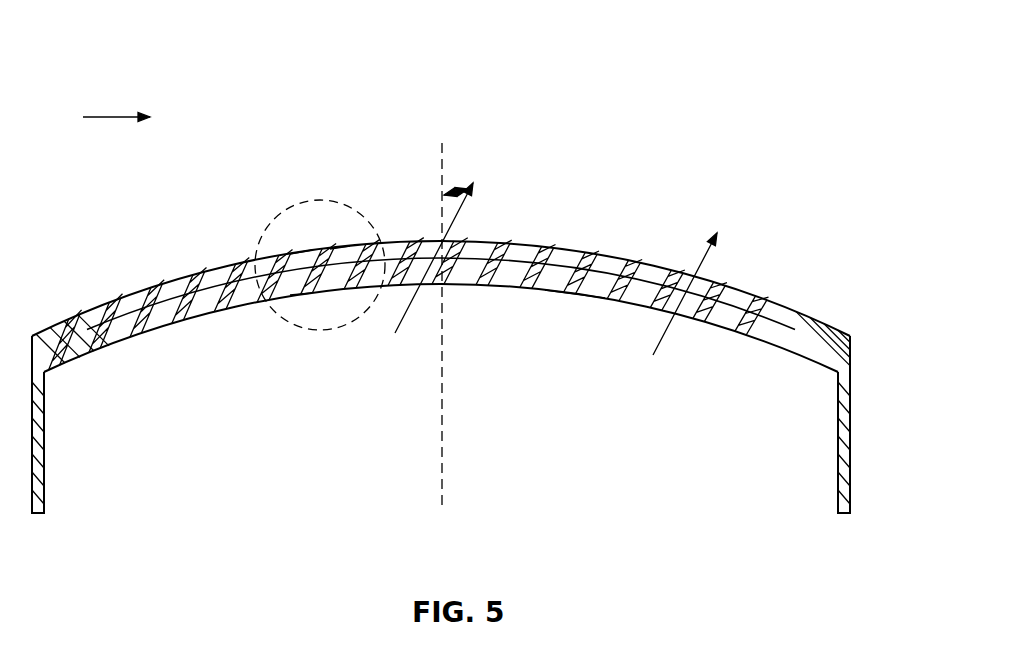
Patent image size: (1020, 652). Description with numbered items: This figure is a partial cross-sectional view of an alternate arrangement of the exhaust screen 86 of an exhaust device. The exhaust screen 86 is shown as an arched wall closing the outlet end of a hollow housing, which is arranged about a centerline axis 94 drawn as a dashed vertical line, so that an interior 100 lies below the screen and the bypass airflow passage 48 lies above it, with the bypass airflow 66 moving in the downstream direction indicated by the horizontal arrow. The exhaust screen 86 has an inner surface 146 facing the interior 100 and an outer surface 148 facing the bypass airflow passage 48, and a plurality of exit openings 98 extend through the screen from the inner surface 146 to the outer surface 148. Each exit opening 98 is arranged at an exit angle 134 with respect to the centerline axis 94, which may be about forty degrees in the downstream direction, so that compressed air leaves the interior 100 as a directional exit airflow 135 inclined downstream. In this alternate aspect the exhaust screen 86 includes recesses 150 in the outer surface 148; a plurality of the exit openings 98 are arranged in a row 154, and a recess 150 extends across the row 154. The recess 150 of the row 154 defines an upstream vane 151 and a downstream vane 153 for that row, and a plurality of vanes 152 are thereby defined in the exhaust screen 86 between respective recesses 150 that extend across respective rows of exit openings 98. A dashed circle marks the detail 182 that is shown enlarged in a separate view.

The bypass airflow passage 48 is at (404, 50).
The bypass airflow 66 is at (103, 117).
The exhaust screen 86 is at (828, 324).
The centerline axis 94 is at (440, 146).
The exit openings 98 is at (598, 298).
The interior 100 is at (215, 441).
The exit angle 134 is at (450, 191).
The directional exit airflow 135 is at (407, 318).
The inner surface 146 is at (812, 363).
The outer surface 148 is at (793, 309).
The recess 150 is at (322, 247).
The upstream vane 151 is at (299, 254).
The vanes 152 is at (513, 249).
The downstream vane 153 is at (339, 249).
The row 154 is at (300, 302).
The detail 182 is at (272, 318).